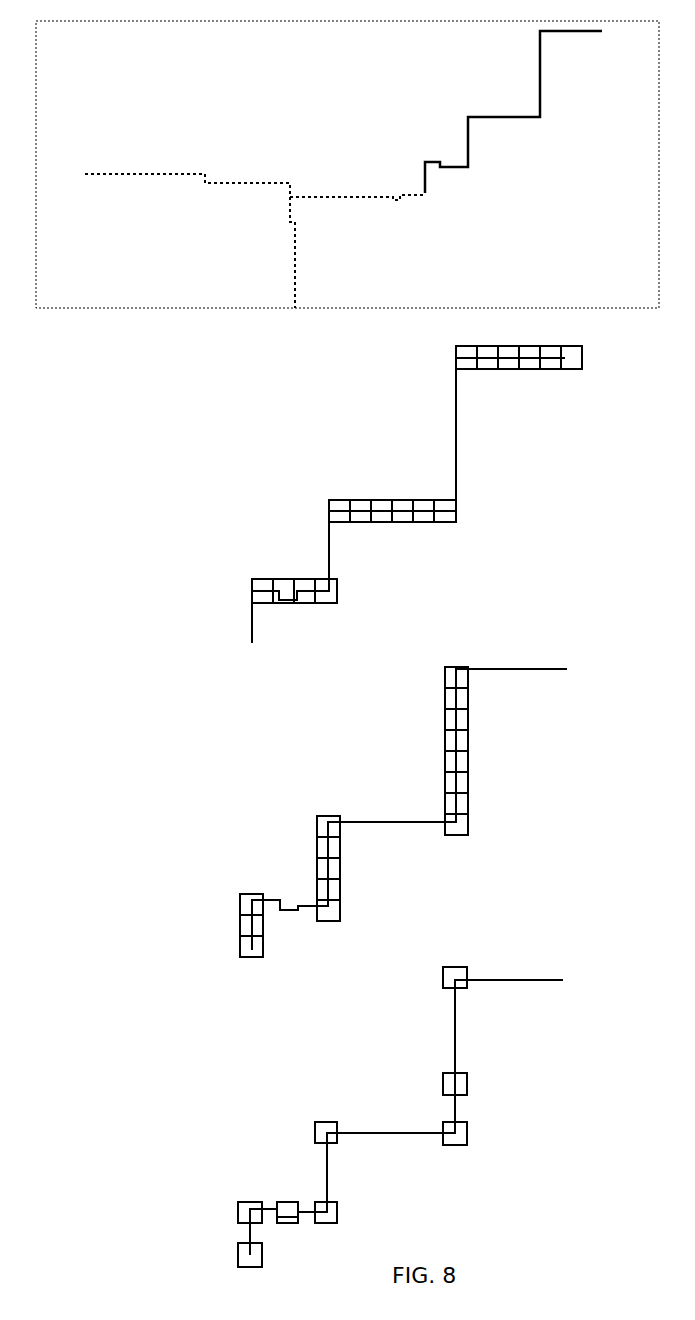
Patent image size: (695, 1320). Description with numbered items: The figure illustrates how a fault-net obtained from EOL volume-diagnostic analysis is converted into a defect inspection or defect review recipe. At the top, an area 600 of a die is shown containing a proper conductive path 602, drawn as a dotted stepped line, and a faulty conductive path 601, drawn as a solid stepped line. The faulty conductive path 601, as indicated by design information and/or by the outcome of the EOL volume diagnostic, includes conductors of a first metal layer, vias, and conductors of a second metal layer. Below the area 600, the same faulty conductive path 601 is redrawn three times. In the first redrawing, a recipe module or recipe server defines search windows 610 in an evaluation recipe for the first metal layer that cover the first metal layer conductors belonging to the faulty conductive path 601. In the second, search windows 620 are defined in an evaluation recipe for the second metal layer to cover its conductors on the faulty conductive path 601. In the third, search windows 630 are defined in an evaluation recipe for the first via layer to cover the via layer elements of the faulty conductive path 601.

The area of a die 600 is at (126, 294).
The faulty conductive path 601 is at (500, 118).
The proper conductive path 602 is at (335, 196).
The search windows for first metal layer 610 is at (568, 372).
The search windows for second metal layer 620 is at (445, 679).
The search windows for first via layer 630 is at (440, 1085).